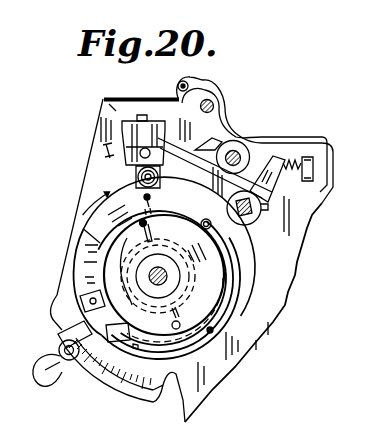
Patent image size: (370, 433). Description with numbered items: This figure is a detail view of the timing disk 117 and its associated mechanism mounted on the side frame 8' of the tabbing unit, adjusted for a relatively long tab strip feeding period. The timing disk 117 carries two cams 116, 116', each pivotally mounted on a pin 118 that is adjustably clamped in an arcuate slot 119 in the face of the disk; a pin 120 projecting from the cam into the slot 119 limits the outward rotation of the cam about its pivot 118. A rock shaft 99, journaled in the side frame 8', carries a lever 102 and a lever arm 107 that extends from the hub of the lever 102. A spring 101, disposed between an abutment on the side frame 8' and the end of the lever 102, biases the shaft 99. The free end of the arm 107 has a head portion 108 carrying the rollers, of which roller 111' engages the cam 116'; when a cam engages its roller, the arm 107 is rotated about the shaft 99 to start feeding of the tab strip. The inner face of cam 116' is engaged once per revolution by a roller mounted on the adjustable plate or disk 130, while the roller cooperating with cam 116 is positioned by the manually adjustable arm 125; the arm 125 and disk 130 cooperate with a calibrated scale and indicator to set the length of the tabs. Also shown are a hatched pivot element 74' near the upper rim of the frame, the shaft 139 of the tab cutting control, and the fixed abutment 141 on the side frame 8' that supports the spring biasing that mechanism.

The lever arm 107 is at (200, 163).
The adjustable plate or disk 130 is at (115, 265).
The pin 118 is at (232, 236).
The arcuate slot 119 is at (252, 290).
The cam 116 is at (267, 338).
The cam 116' is at (143, 246).
The timing disk 117 is at (80, 254).
The pin 120 is at (158, 202).
The head portion 108 is at (124, 128).
The roller 111' is at (96, 174).
The fixed abutment 141 is at (104, 150).
The side frame 8' is at (97, 93).
The pivot pin 74' is at (237, 93).
The shaft 139 is at (236, 152).
The rock shaft 99 is at (258, 218).
The lever 102 is at (278, 178).
The spring 101 is at (292, 156).
The manually adjustable arm 125 is at (52, 380).